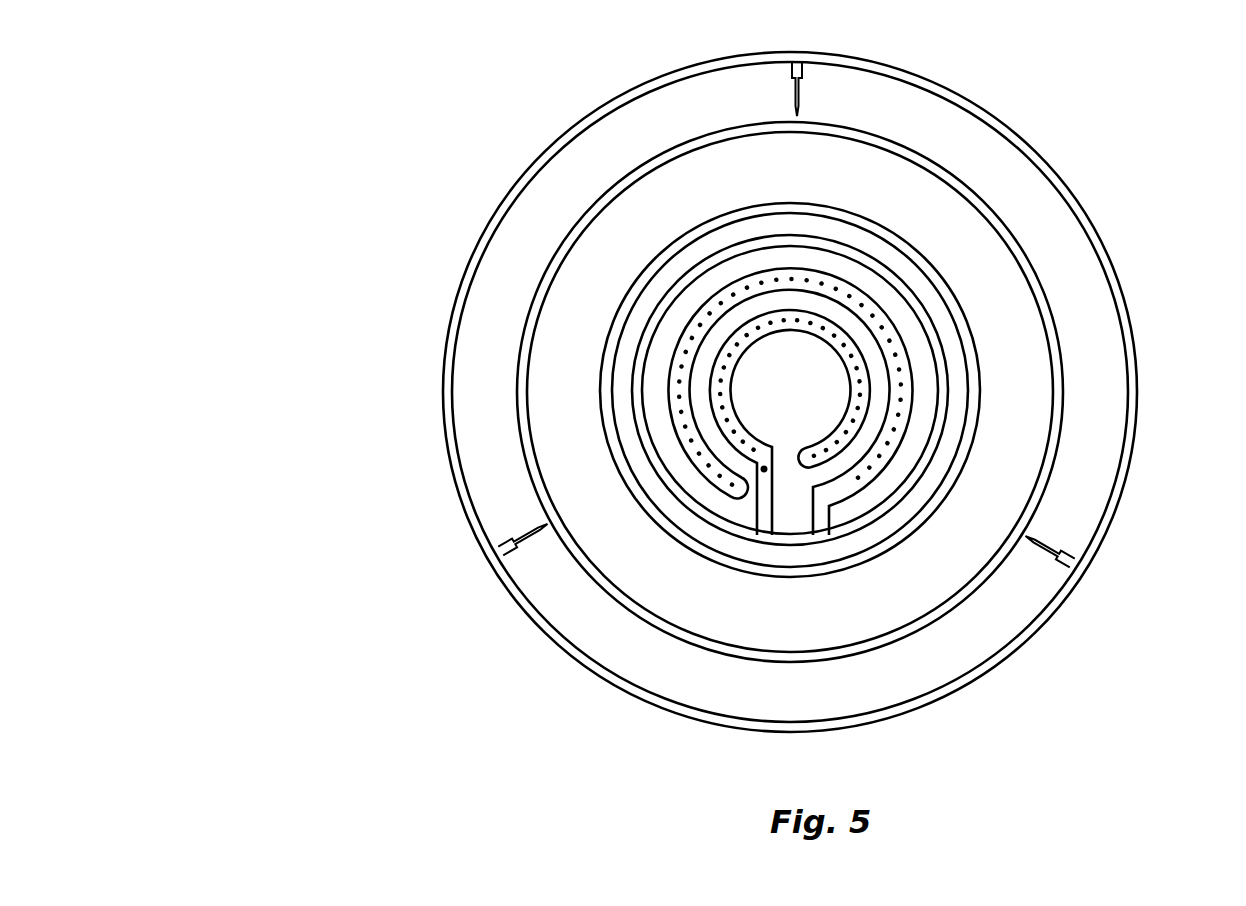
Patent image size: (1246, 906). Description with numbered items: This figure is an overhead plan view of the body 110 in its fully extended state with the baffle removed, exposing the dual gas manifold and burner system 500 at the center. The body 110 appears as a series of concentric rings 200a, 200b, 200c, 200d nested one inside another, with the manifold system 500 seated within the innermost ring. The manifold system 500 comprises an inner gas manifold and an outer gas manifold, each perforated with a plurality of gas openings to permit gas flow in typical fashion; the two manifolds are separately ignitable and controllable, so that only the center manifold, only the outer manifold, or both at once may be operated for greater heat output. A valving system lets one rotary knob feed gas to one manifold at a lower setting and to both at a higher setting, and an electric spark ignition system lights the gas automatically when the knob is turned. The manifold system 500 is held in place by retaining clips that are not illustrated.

The body 110 is at (729, 367).
The outer heating plate ring 200a is at (545, 148).
The second heating plate ring 200b is at (743, 133).
The third heating plate ring 200c is at (812, 203).
The inner heating plate ring 200d is at (870, 253).
The dual gas manifold and burner system 500 is at (918, 388).